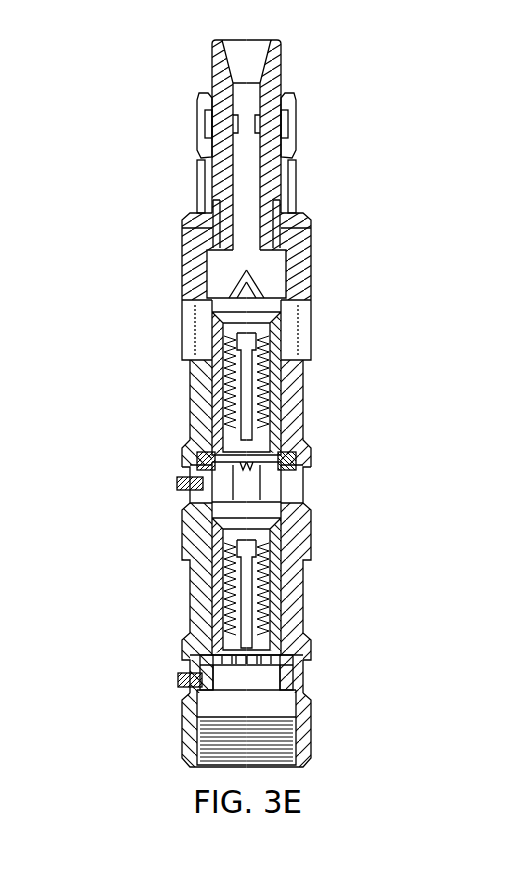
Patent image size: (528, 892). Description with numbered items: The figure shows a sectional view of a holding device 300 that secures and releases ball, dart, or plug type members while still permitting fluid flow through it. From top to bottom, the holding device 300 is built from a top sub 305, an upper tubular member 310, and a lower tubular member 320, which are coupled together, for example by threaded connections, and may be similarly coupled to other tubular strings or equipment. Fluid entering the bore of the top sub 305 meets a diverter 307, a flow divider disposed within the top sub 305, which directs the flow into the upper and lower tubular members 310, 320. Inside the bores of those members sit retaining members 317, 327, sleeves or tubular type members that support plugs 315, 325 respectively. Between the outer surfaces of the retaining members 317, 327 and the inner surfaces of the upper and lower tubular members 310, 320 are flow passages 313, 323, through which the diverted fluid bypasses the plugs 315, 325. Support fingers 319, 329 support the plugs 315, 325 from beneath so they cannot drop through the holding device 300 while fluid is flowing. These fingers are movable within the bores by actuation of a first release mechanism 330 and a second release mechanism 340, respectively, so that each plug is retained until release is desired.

The holding device 300 is at (390, 108).
The top sub 305 is at (313, 226).
The diverter 307 is at (278, 262).
The flow passage 313 is at (276, 280).
The upper tubular member 310 is at (303, 396).
The retaining member 317 is at (210, 384).
The plug 315 is at (254, 372).
The support fingers 319 is at (218, 466).
The flow passage 323 is at (277, 493).
The first release mechanism 330 is at (334, 461).
The lower tubular member 320 is at (304, 614).
The retaining member 327 is at (212, 590).
The plug 325 is at (256, 577).
The support fingers 329 is at (205, 662).
The second release mechanism 340 is at (157, 688).